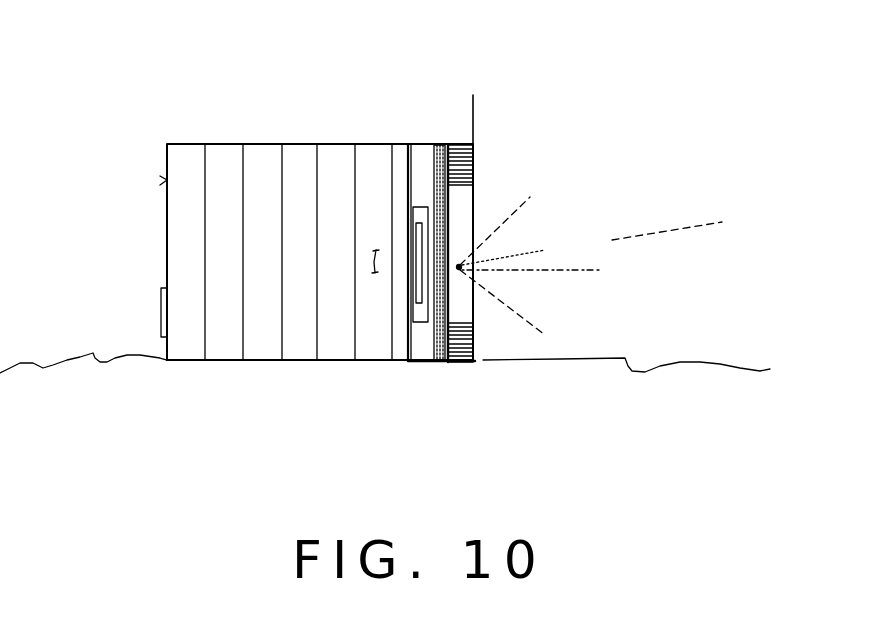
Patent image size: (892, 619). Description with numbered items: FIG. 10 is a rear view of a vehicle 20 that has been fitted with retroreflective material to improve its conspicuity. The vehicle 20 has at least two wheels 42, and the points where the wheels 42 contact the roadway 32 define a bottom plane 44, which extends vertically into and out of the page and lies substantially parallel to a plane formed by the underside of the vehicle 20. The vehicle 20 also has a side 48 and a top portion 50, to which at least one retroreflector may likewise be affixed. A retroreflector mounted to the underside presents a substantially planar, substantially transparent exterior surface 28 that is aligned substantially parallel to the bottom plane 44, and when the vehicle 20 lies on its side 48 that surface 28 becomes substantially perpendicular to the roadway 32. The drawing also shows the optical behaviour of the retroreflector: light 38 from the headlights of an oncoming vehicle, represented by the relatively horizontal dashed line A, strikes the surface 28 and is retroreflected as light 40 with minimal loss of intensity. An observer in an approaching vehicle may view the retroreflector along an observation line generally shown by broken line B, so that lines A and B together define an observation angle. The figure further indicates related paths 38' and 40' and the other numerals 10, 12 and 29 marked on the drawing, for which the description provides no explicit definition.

The vehicle 20 is at (157, 46).
The substantially planar, substantially transparent exterior surface 28 is at (163, 181).
The top portion 50 is at (122, 260).
The side 48 is at (295, 362).
The roadway 32 is at (430, 371).
The bottom plane 44 is at (474, 107).
The wheels 42 is at (474, 160).
The panel 12 is at (474, 178).
The door panel 10 is at (453, 207).
The sensor / emitter 29 is at (458, 260).
The field of view boundary 38' is at (529, 262).
The field of view angle 40' is at (531, 257).
The light 38 is at (636, 264).
The retroreflected light 40 is at (634, 288).
The relatively horizontal dashed line A is at (573, 267).
The observation line B is at (548, 251).